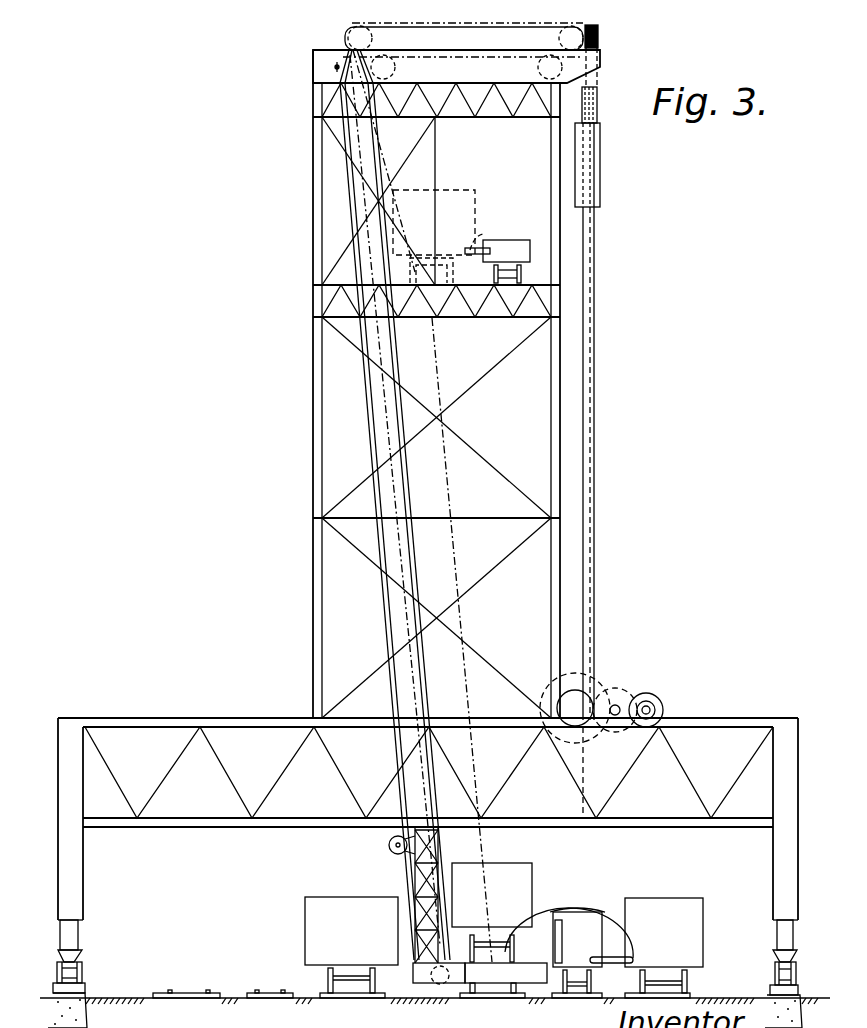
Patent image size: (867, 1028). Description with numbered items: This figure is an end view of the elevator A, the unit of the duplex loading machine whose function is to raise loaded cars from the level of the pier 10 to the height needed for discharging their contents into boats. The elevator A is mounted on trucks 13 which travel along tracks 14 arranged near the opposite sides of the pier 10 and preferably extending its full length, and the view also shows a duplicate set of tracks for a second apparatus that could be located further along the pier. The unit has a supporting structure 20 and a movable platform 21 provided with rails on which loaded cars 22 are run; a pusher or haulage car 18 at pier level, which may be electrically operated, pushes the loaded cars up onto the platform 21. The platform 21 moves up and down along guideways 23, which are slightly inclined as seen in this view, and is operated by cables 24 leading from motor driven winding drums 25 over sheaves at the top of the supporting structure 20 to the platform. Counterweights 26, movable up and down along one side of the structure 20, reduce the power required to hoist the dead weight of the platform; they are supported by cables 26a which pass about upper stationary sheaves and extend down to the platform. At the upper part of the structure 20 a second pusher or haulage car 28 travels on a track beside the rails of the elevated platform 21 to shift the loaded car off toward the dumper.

The pier 10 is at (118, 997).
The trucks 13 is at (84, 964).
The tracks 14 is at (82, 985).
The pusher or haulage car 18 is at (583, 909).
The supporting structure 20 is at (313, 422).
The movable platform 21 is at (490, 975).
The loaded cars 22 is at (522, 870).
The guideways 23 is at (407, 552).
The cables 24 is at (560, 422).
The motor driven winding drums 25 is at (580, 700).
The counterweights 26 is at (600, 186).
The cables 26a is at (464, 37).
The pusher or haulage car 28 is at (530, 242).
The elevator A is at (560, 372).